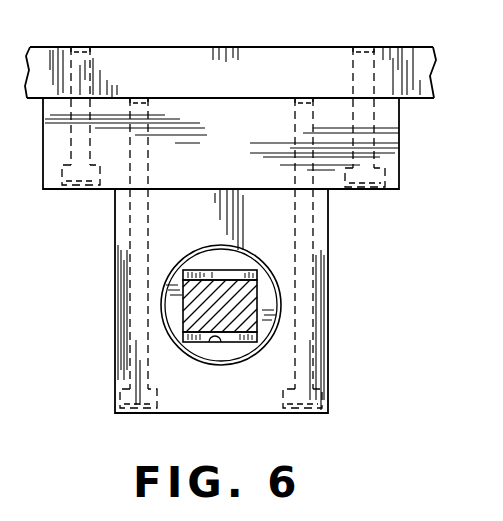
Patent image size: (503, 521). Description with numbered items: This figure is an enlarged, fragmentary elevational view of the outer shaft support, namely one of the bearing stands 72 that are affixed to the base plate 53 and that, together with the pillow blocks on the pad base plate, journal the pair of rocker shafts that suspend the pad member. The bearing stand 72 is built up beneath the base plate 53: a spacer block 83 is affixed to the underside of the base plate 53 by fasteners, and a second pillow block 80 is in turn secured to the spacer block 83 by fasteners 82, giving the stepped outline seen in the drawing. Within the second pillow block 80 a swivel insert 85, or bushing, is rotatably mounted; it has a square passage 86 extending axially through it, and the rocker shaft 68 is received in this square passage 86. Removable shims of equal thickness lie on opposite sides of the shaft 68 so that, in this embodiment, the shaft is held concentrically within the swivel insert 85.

The base plate 53 is at (242, 48).
The spacer block 83 is at (392, 143).
The fastener 82 is at (322, 252).
The second pillow block 80 is at (232, 405).
The bearing stand 72 is at (115, 343).
The swivel insert 85 is at (273, 313).
The rocker shaft 68 is at (200, 297).
The square passage 86 is at (208, 343).